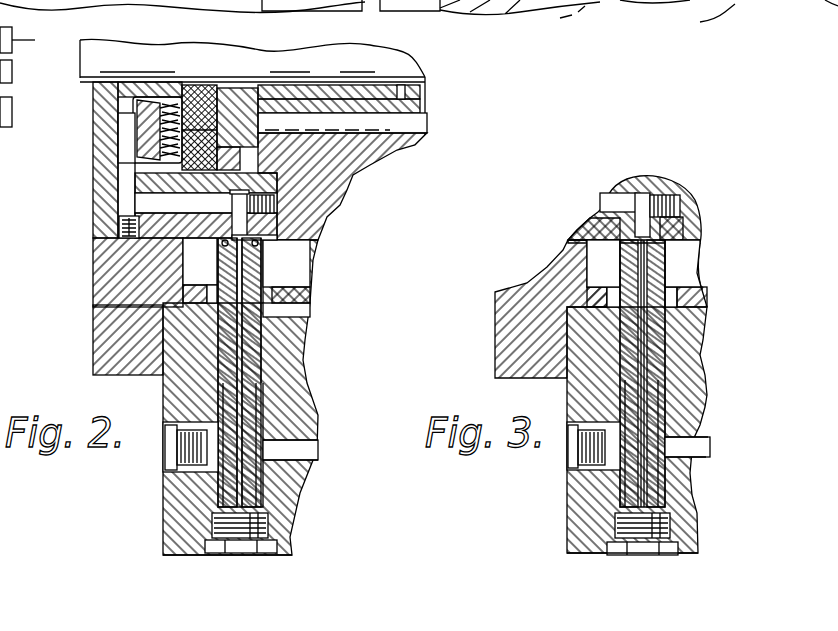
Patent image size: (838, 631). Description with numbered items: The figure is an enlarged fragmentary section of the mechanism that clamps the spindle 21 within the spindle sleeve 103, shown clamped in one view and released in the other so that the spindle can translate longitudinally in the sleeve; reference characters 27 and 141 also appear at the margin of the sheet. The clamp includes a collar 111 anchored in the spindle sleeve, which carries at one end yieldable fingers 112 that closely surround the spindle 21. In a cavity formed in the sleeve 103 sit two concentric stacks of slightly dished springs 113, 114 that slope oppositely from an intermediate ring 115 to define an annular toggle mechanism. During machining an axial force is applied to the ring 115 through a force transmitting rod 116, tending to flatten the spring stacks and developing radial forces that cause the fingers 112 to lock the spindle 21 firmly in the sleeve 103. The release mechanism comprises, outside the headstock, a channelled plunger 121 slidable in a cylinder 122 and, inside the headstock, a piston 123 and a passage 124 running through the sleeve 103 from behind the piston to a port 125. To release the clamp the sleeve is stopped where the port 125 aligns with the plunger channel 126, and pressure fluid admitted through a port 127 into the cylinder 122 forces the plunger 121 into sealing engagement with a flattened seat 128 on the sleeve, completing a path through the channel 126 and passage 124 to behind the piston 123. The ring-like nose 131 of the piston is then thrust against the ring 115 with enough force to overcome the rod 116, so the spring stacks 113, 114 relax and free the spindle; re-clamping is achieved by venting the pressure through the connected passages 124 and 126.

In FIG. 2, the spindle 21 is at (340, 60).
In FIG. 2, the member 27 is at (555, 20).
In FIG. 2, the sleeve 103 is at (92, 88).
In FIG. 3, the sleeve 103 is at (647, 180).
In FIG. 2, the collar 111 is at (387, 87).
In FIG. 2, the yieldable fingers 112 is at (252, 80).
In FIG. 2, the stack of dished springs 113 is at (182, 160).
In FIG. 2, the stack of dished springs 114 is at (135, 210).
In FIG. 2, the intermediate ring 115 is at (178, 164).
In FIG. 2, the force transmitting rod 116 is at (397, 133).
In FIG. 2, the channelled plunger 121 is at (260, 362).
In FIG. 3, the channelled plunger 121 is at (657, 362).
In FIG. 2, the cylinder 122 is at (260, 405).
In FIG. 3, the cylinder 122 is at (660, 407).
In FIG. 2, the piston 123 is at (157, 117).
In FIG. 2, the passage 124 is at (127, 142).
In FIG. 3, the passage 124 is at (603, 207).
In FIG. 2, the port 125 is at (237, 227).
In FIG. 3, the port 125 is at (660, 228).
In FIG. 2, the plunger channel 126 is at (270, 314).
In FIG. 3, the plunger channel 126 is at (647, 285).
In FIG. 2, the port 127 is at (310, 456).
In FIG. 3, the port 127 is at (706, 455).
In FIG. 2, the flattened seat 128 is at (257, 240).
In FIG. 2, the ring-like nose 131 is at (157, 97).
In FIG. 2, the member 141 is at (696, 20).